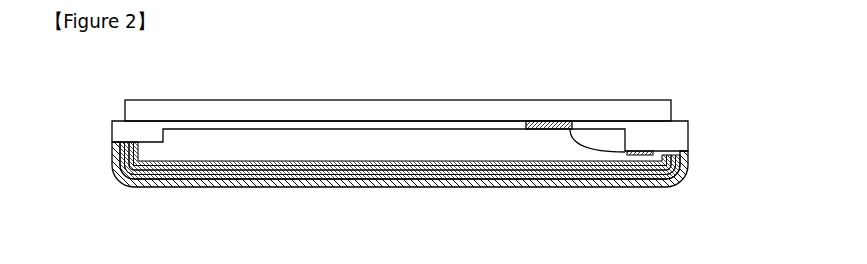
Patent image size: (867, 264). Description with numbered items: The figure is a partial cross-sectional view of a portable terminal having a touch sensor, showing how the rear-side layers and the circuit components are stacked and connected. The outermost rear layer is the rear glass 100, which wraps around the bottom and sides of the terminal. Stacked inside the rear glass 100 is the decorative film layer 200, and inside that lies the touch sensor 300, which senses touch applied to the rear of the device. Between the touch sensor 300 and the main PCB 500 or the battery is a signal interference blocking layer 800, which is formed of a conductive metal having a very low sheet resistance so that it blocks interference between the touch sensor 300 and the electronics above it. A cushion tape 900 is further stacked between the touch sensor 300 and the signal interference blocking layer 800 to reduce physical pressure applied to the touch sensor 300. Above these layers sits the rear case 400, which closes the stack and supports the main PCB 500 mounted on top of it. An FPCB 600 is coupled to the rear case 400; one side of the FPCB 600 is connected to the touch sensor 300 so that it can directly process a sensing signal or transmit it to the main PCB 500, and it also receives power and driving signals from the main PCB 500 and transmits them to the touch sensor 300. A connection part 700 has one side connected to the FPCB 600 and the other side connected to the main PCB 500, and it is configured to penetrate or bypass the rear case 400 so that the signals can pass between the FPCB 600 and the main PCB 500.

The rear glass 100 is at (218, 187).
The decorative film layer 200 is at (302, 178).
The touch sensor 300 is at (390, 173).
The rear case 400 is at (115, 135).
The main PCB 500 is at (140, 108).
The FPCB 600 is at (652, 150).
The connection part 700 is at (550, 121).
The signal interference blocking layer 800 is at (571, 161).
The cushion tape 900 is at (468, 166).